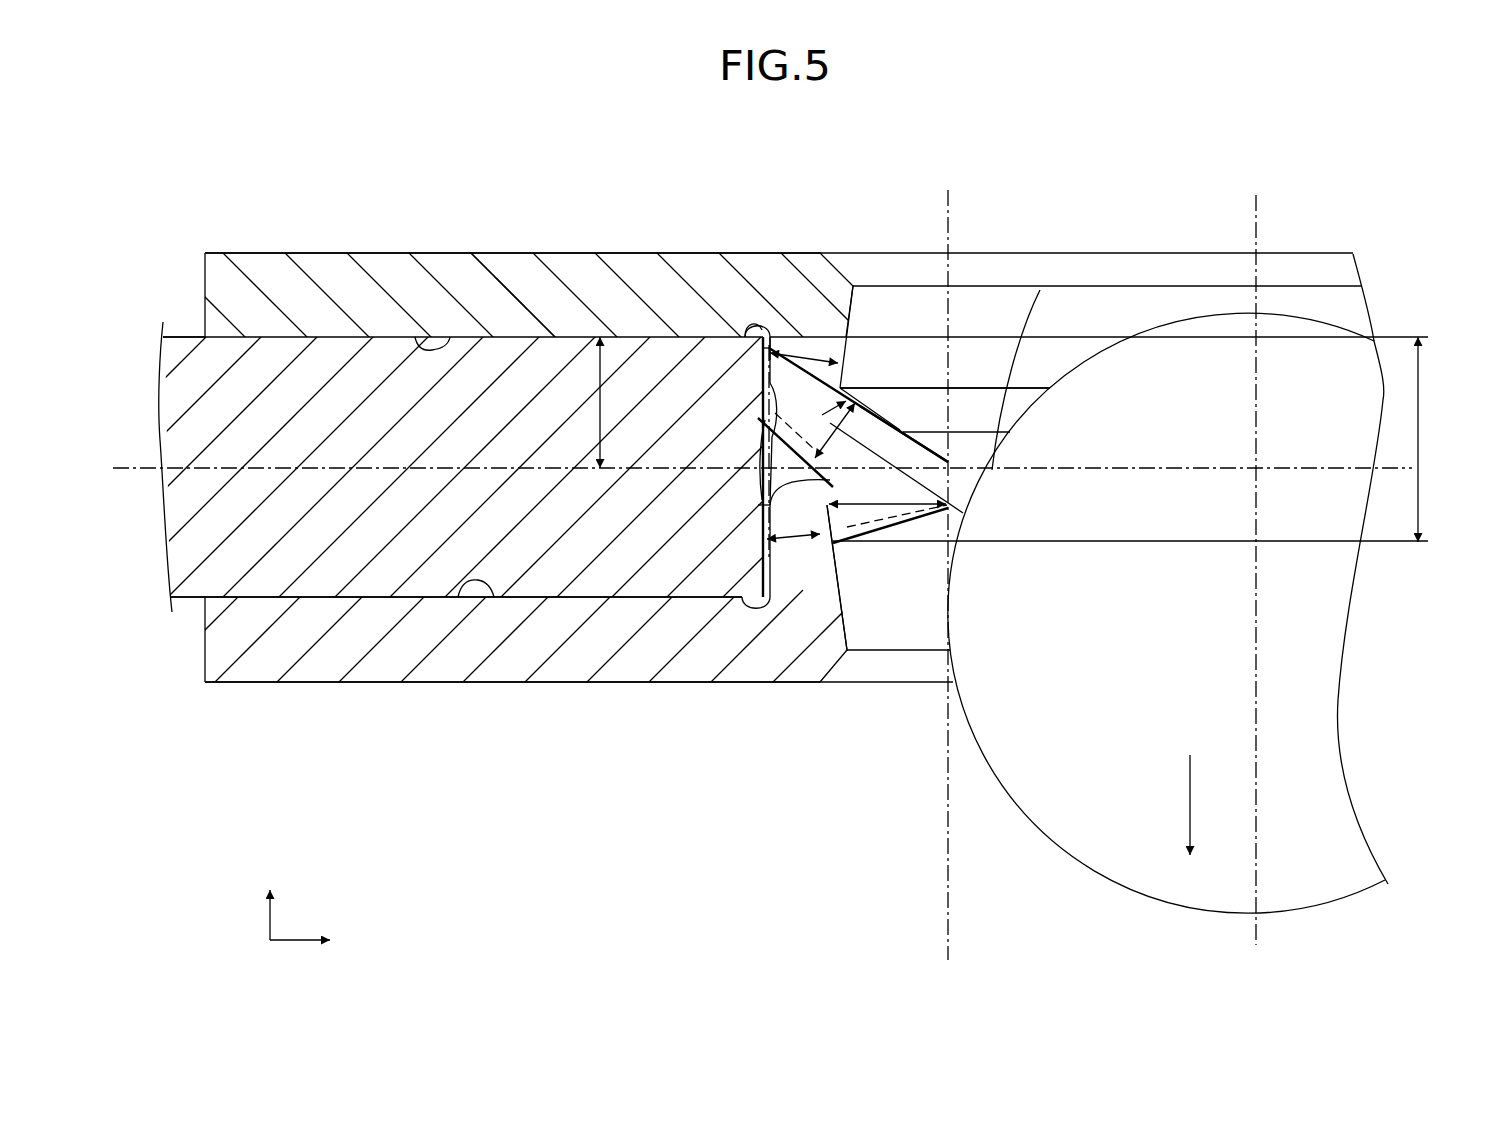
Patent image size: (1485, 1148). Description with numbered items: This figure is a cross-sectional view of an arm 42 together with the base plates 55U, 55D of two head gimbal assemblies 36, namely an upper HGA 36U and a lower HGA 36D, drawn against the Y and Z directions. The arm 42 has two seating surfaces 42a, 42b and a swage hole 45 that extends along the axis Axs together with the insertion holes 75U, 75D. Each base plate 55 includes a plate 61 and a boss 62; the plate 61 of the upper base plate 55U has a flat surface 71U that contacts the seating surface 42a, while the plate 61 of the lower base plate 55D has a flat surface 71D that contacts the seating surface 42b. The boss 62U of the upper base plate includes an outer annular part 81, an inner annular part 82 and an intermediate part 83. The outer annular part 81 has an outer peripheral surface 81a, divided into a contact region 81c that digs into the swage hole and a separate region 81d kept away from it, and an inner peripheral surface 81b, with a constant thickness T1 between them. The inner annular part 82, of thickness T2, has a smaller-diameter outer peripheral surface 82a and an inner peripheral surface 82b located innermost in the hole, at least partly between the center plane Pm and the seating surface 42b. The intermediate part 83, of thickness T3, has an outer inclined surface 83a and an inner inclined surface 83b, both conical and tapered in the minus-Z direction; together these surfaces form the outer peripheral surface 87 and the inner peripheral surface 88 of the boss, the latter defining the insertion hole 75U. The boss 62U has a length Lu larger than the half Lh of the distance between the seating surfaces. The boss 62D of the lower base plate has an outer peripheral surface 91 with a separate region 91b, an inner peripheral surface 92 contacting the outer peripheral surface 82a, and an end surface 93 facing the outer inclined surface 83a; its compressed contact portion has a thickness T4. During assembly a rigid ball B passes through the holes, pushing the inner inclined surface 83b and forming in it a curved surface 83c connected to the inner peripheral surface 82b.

The head gimbal assembly 36 is at (542, 483).
The upper head gimbal assembly 36U is at (265, 250).
The lower head gimbal assembly 36D is at (265, 690).
The arm 42 is at (168, 354).
The seating surface 42a is at (180, 335).
The seating surface 42b is at (172, 612).
The base plate 55 is at (512, 228).
The base plate 55U is at (345, 253).
The base plate 55D is at (355, 683).
The flat surface 71U is at (417, 330).
The flat surface 71D is at (462, 682).
The plate 61 is at (482, 270).
The insertion hole 75U is at (1200, 264).
The insertion hole 75D is at (930, 662).
The outer annular part 81 is at (795, 343).
The outer peripheral surface 81a is at (758, 397).
The inner peripheral surface 81b is at (848, 380).
The contact region 81c is at (789, 361).
The separate region 81d is at (737, 325).
The inner annular part 82 is at (1040, 290).
The outer peripheral surface 82a is at (762, 502).
The inner peripheral surface 82b is at (1000, 470).
The intermediate part 83 is at (905, 440).
The outer inclined surface 83a is at (762, 433).
The inner inclined surface 83b is at (945, 470).
The curved surface 83c is at (952, 470).
The outer peripheral surface 87 is at (835, 390).
The inner peripheral surface 88 is at (870, 409).
The outer peripheral surface 91 is at (762, 512).
The separate region 91b is at (760, 603).
The inner peripheral surface 92 is at (858, 585).
The end surface 93 is at (762, 480).
The swage hole 45 is at (753, 331).
The boss 62 is at (945, 309).
The boss 62U is at (937, 470).
The boss 62D is at (762, 530).
The thickness T1 is at (810, 357).
The thickness T2 is at (900, 515).
The thickness T3 is at (930, 455).
The thickness T4 is at (813, 537).
The half of the distance Lh is at (598, 392).
The length Lu is at (1420, 440).
The center plane Pm is at (133, 468).
The axis Axs is at (1258, 198).
The ball B is at (1320, 902).
The Y direction Y is at (310, 941).
The Z direction Z is at (269, 899).